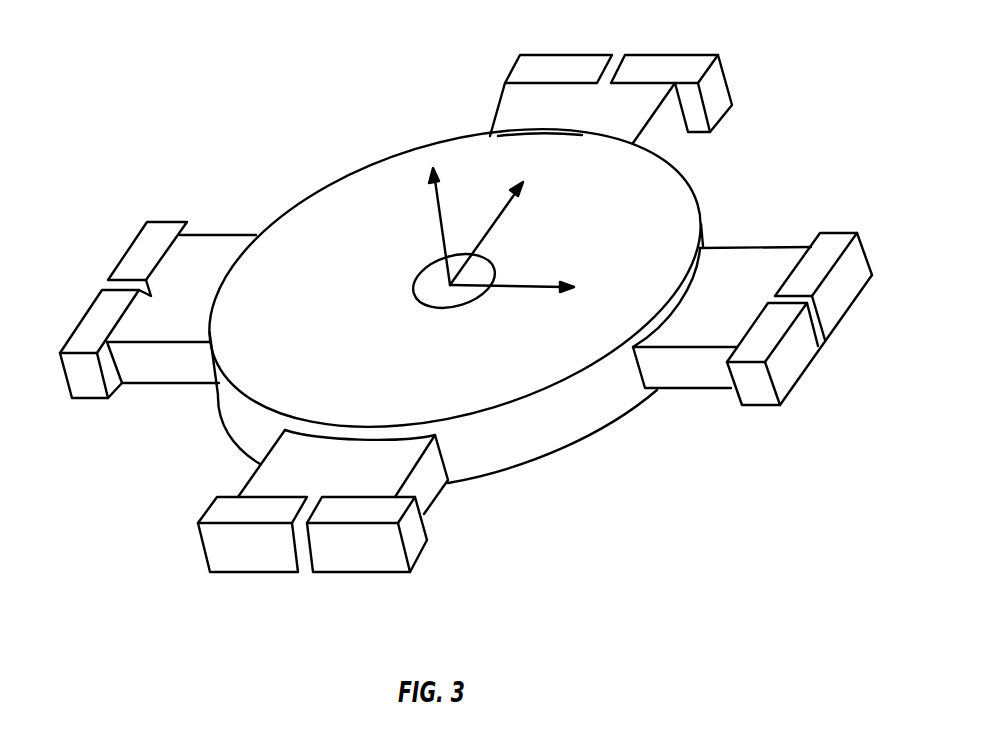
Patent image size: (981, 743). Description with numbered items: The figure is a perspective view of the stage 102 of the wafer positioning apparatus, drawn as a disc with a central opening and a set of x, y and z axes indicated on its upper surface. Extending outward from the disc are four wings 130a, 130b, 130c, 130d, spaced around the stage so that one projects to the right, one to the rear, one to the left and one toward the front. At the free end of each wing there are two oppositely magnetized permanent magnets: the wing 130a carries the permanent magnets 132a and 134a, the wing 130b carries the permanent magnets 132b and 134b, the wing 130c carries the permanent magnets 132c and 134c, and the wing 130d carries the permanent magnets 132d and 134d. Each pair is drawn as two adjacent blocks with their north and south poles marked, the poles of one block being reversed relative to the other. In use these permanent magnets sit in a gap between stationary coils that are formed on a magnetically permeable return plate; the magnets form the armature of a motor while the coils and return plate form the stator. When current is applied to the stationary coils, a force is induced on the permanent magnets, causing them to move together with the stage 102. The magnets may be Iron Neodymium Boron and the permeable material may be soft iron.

The stage 102 is at (402, 412).
The wing 130a is at (765, 285).
The wing 130b is at (636, 122).
The wing 130c is at (197, 333).
The wing 130d is at (399, 475).
The permanent magnet 132a is at (755, 398).
The permanent magnet 132b is at (700, 63).
The permanent magnet 132c is at (150, 233).
The permanent magnet 132d is at (220, 512).
The permanent magnet 134a is at (830, 242).
The permanent magnet 134b is at (530, 67).
The permanent magnet 134c is at (102, 305).
The permanent magnet 134d is at (412, 543).